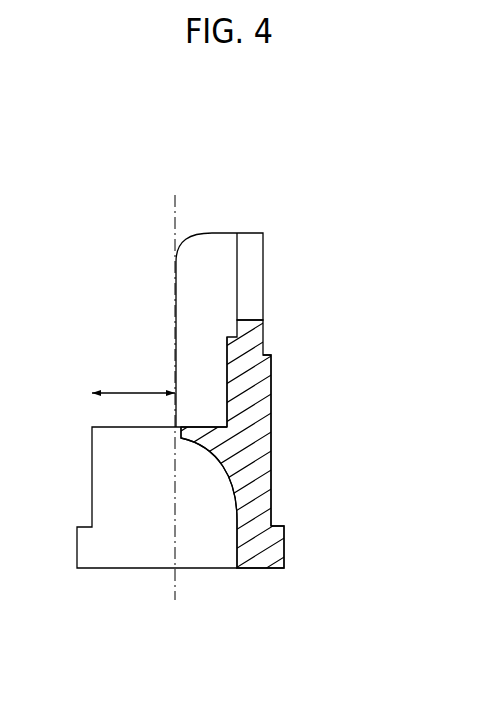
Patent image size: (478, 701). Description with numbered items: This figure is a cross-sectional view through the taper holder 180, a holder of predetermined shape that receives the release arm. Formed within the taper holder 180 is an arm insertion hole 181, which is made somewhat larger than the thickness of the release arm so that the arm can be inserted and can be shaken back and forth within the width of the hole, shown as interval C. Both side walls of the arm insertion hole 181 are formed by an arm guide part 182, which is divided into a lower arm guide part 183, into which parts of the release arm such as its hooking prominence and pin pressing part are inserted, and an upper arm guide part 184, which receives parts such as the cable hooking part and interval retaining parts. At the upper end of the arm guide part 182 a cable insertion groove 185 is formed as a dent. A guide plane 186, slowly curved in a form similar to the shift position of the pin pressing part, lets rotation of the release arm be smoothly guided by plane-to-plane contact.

The taper holder 180 is at (358, 157).
The arm insertion hole 181 is at (124, 462).
The arm guide part 182 is at (359, 409).
The lower arm guide part 183 is at (257, 448).
The upper arm guide part 184 is at (257, 406).
The cable insertion groove 185 is at (250, 269).
The guide plane 186 is at (237, 520).